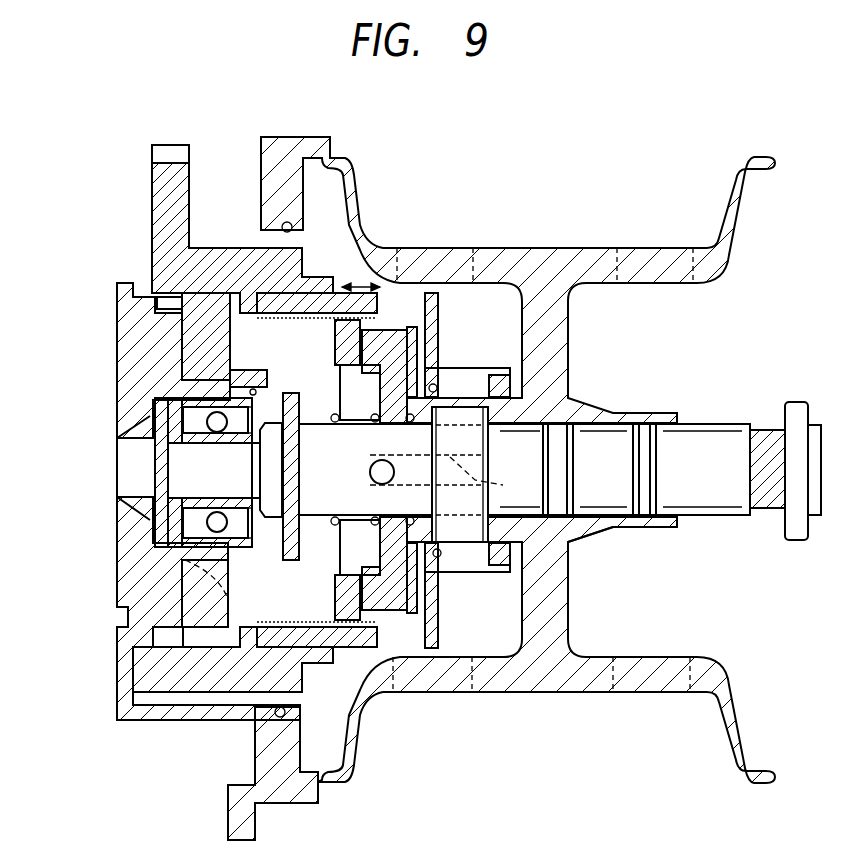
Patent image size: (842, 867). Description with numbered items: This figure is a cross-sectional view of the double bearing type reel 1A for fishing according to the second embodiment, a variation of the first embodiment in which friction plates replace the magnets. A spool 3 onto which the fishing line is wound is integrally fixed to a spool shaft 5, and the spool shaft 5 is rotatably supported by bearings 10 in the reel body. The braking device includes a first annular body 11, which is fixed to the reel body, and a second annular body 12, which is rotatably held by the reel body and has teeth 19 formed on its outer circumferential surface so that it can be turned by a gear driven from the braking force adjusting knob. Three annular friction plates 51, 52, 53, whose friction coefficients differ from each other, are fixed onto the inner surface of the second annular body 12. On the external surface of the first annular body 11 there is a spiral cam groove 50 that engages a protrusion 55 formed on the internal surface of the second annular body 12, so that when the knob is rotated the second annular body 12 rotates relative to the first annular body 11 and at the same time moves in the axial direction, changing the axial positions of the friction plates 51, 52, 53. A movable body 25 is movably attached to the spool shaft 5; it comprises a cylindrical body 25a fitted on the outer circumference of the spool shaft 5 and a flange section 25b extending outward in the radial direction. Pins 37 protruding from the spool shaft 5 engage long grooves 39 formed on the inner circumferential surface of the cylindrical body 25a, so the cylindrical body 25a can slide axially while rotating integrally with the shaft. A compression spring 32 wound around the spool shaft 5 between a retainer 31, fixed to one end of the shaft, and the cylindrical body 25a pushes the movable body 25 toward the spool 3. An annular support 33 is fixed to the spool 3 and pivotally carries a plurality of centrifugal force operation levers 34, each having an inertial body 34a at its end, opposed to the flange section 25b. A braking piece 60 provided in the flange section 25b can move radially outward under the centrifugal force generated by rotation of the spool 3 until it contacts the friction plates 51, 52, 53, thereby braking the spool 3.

The double bearing type reel for fishing 1A is at (646, 178).
The spool 3 is at (557, 262).
The spool shaft 5 is at (716, 436).
The bearing 10 is at (213, 438).
The first annular body 11 is at (140, 370).
The second annular body 12 is at (163, 196).
The teeth 19 is at (178, 147).
The movable body 25 is at (500, 459).
The cylindrical body 25a is at (567, 548).
The flange section 25b is at (415, 395).
The retainer 31 is at (288, 556).
The compression spring 32 is at (333, 526).
The annular support 33 is at (462, 380).
The centrifugal force operation lever 34 is at (438, 312).
The inertial body 34a is at (510, 383).
The pin 37 is at (370, 471).
The long groove 39 is at (492, 479).
The spiral cam groove 50 is at (183, 312).
The annular friction plate 51 is at (266, 318).
The annular friction plate 52 is at (303, 318).
The annular friction plate 53 is at (342, 326).
The protrusion 55 is at (170, 298).
The braking piece 60 is at (385, 330).